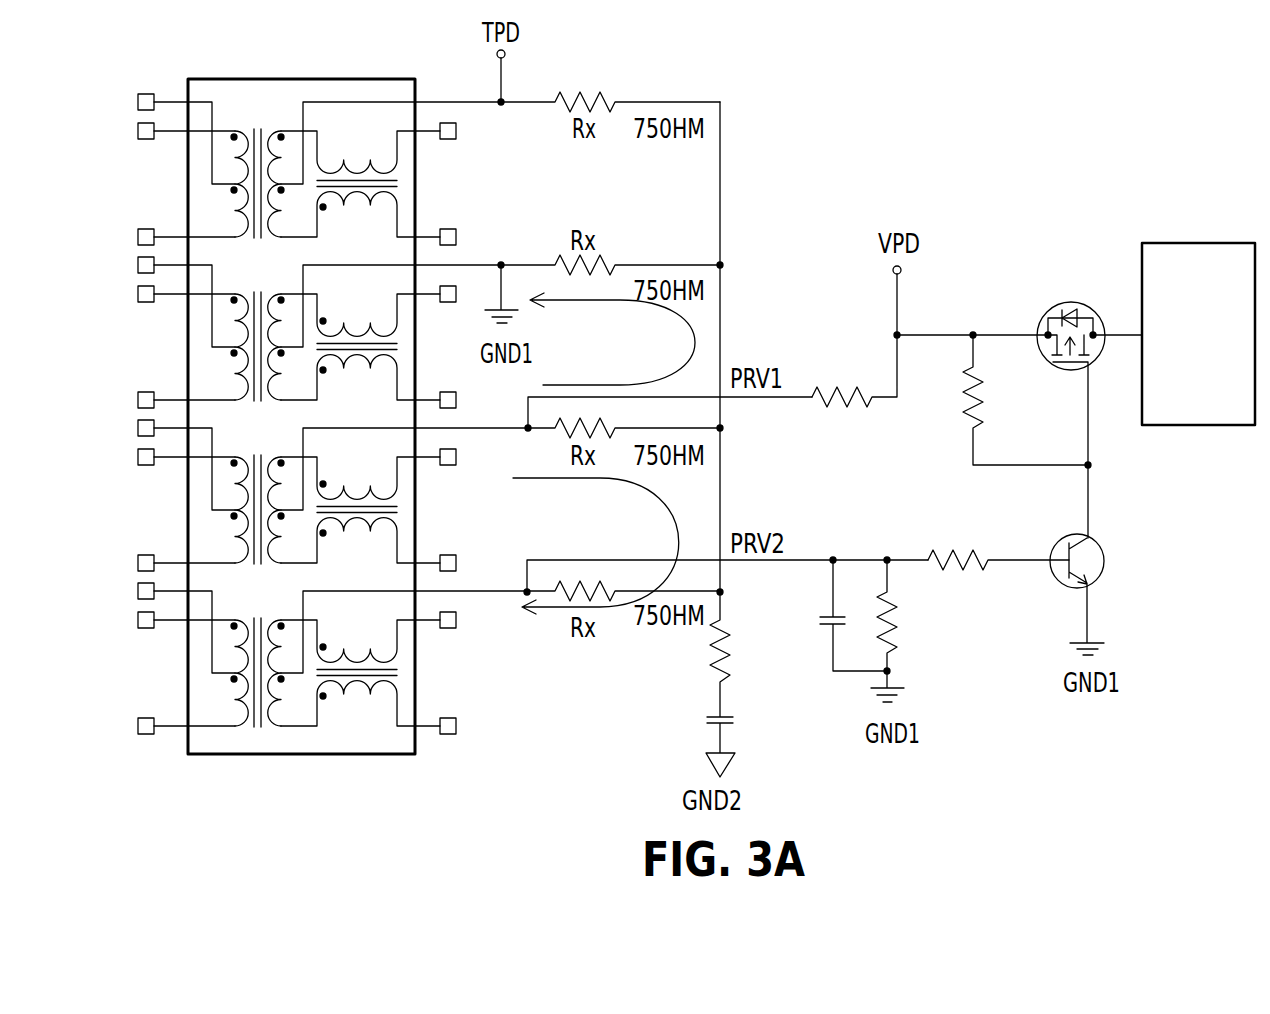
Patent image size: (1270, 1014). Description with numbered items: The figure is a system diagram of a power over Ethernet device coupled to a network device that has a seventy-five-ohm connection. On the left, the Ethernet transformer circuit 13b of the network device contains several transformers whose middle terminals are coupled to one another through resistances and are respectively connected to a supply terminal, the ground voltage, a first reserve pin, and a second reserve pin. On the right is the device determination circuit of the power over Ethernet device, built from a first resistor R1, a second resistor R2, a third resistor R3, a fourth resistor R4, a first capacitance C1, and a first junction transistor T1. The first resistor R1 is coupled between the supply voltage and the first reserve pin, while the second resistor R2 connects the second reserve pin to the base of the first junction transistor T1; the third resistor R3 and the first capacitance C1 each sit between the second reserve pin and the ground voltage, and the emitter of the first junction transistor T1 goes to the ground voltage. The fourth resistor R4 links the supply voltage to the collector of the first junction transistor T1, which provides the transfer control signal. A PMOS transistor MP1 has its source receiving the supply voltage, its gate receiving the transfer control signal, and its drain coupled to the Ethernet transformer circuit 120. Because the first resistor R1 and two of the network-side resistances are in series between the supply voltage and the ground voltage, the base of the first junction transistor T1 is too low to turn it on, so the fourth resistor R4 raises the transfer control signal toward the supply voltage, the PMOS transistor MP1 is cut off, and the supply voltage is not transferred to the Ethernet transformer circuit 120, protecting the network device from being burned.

The Ethernet transformer circuit 13b is at (380, 756).
The Ethernet transformer circuit 120 is at (1243, 427).
The first resistor R1 is at (854, 371).
The second resistor R2 is at (998, 543).
The third resistor R3 is at (903, 631).
The fourth resistor R4 is at (1025, 400).
The first capacitance C1 is at (837, 615).
The first junction transistor T1 is at (1092, 594).
The PMOS transistor MP1 is at (1089, 403).